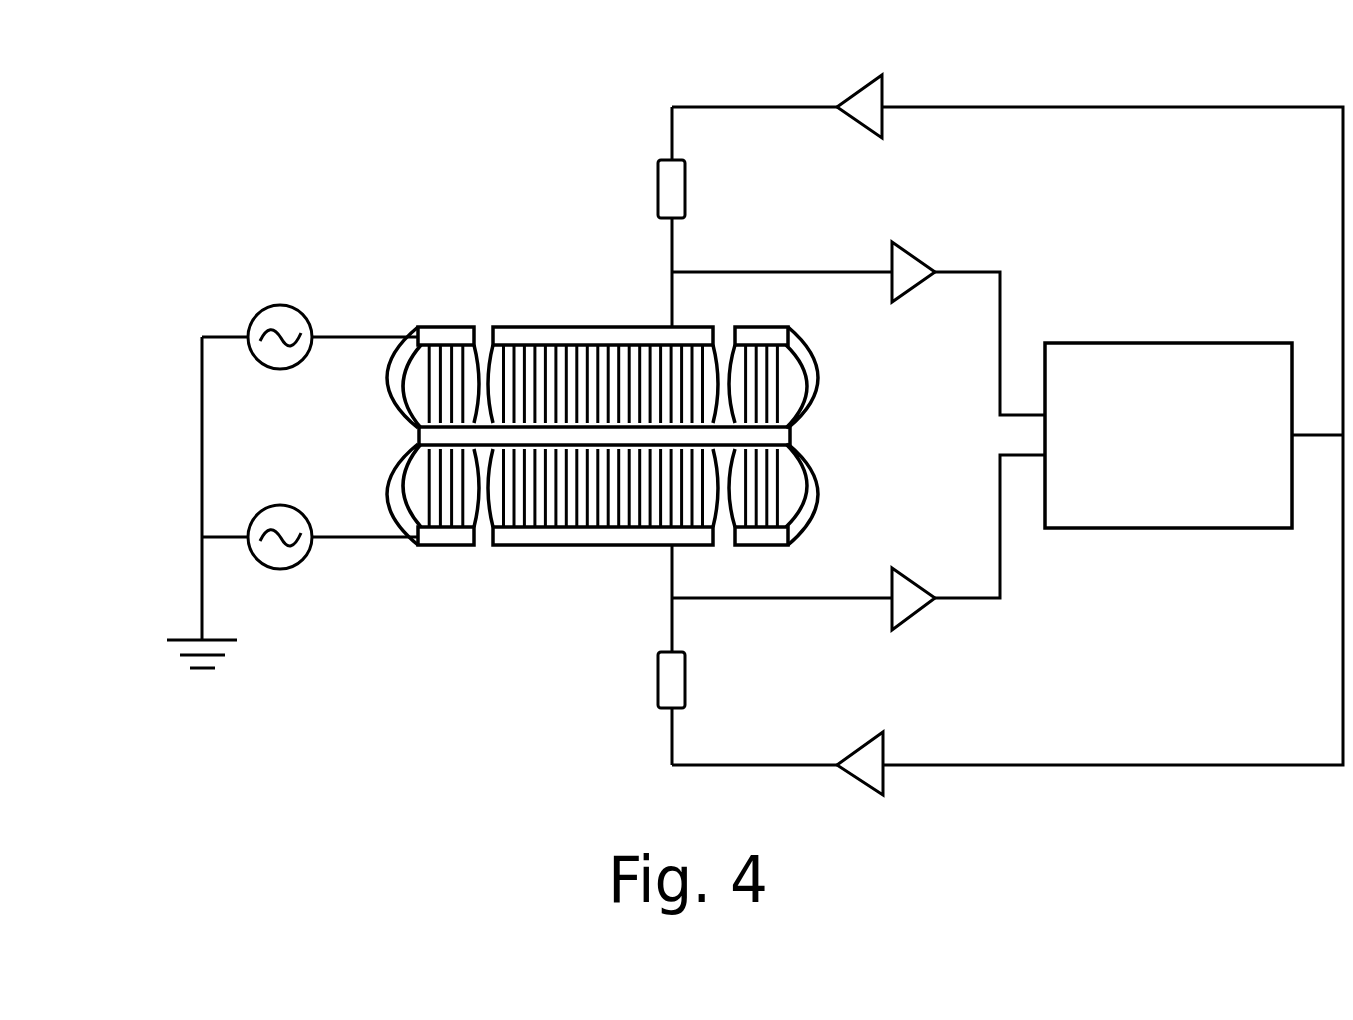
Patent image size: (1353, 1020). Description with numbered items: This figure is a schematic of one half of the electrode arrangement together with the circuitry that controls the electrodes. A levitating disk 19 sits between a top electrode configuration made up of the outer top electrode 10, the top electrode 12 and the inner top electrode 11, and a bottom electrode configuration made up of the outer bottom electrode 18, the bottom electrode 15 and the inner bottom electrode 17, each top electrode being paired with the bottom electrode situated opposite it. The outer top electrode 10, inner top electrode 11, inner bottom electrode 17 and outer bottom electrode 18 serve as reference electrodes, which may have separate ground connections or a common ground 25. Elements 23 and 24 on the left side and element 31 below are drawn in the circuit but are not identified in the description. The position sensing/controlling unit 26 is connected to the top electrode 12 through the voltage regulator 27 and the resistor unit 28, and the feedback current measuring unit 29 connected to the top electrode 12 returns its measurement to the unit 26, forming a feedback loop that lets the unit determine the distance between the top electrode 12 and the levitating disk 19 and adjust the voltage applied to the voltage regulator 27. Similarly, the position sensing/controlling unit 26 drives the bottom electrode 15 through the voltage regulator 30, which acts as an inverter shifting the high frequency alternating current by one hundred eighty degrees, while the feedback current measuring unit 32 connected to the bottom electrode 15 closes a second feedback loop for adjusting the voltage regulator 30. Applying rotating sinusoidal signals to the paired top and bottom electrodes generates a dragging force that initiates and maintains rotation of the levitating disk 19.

The outer top electrode 10 is at (457, 337).
The inner top electrode 11 is at (760, 338).
The top electrode 12 is at (615, 337).
The bottom electrode 15 is at (615, 545).
The inner bottom electrode 17 is at (760, 545).
The outer bottom electrode 18 is at (457, 545).
The levitating disk 19 is at (418, 437).
The AC voltage source 23 is at (281, 305).
The AC voltage source 24 is at (283, 569).
The ground 25 is at (167, 652).
The position sensing/controlling unit 26 is at (1200, 343).
The voltage regulator 27 is at (866, 100).
The resistor unit 28 is at (655, 178).
The feedback current measuring unit 29 is at (913, 268).
The voltage regulator 30 is at (867, 770).
The resistor 31 is at (655, 694).
The feedback current measuring unit 32 is at (913, 606).